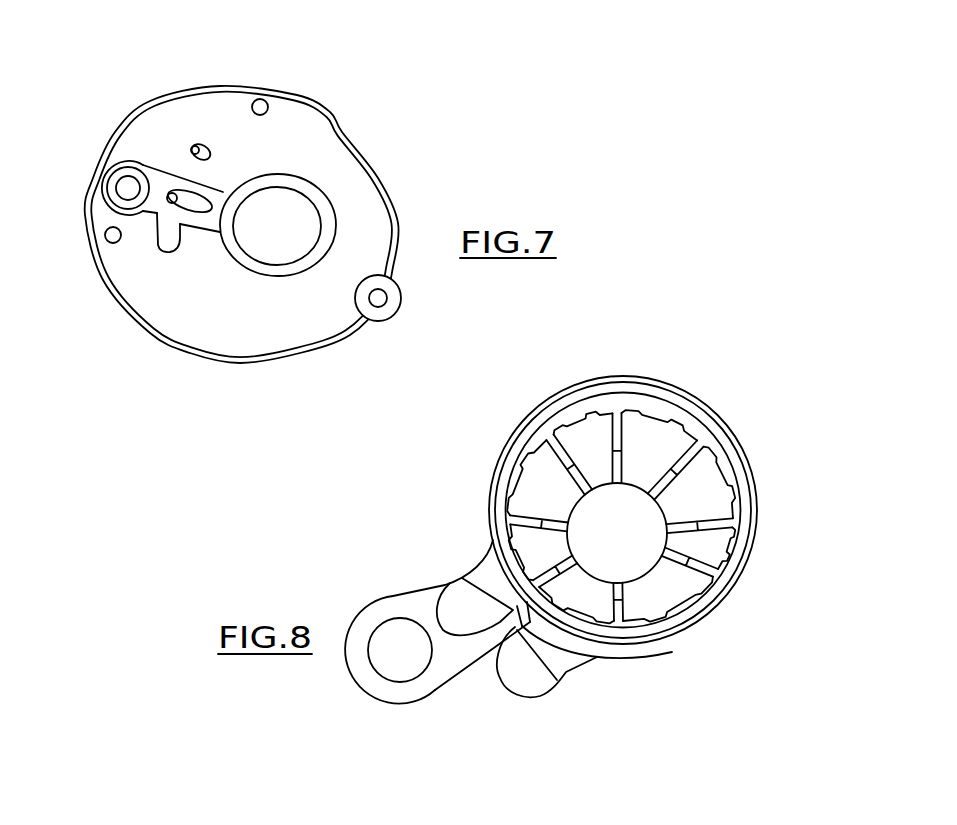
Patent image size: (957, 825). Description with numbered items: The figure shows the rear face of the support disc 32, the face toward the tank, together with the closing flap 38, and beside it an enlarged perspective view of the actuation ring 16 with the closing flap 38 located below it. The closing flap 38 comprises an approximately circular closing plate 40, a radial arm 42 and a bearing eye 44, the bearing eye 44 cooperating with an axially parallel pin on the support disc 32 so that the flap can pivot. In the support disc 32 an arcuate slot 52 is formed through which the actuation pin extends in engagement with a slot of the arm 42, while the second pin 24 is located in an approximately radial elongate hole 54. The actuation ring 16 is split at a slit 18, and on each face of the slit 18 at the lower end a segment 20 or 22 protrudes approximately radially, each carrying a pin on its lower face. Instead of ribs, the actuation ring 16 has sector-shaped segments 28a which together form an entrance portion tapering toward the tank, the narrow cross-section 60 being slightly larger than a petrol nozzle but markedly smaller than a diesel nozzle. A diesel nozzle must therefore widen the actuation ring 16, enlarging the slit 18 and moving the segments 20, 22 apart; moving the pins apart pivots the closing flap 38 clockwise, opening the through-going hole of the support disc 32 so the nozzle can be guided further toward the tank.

In FIG. 8, the actuation ring 16 is at (657, 489).
In FIG. 8, the slit 18 is at (647, 653).
In FIG. 8, the segment 20 is at (452, 595).
In FIG. 7, the segment 22 is at (168, 182).
In FIG. 8, the segment 22 is at (541, 678).
In FIG. 7, the pin 24 is at (199, 145).
In FIG. 8, the sector-shaped segments 28a is at (650, 440).
In FIG. 7, the support disc 32 is at (243, 195).
In FIG. 7, the closing flap 38 is at (330, 176).
In FIG. 7, the closing plate 40 is at (268, 246).
In FIG. 8, the radial arm 42 is at (465, 650).
In FIG. 7, the bearing eye 44 is at (94, 185).
In FIG. 8, the bearing eye 44 is at (380, 628).
In FIG. 7, the arcuate slot 52 is at (157, 243).
In FIG. 7, the elongate hole 54 is at (210, 150).
In FIG. 8, the narrow cross-section 60 is at (601, 539).